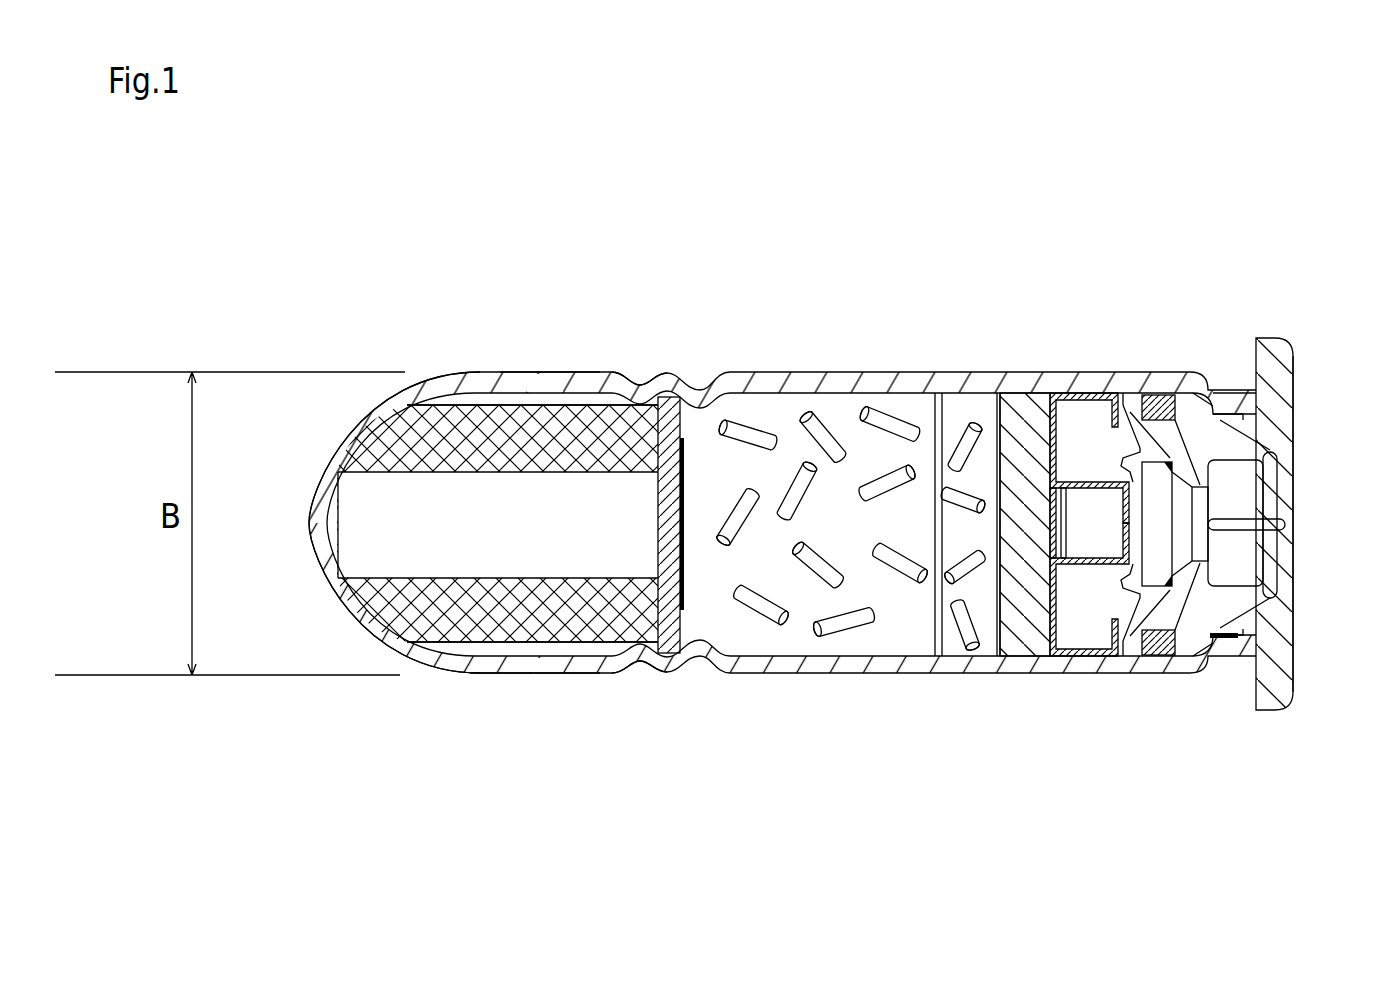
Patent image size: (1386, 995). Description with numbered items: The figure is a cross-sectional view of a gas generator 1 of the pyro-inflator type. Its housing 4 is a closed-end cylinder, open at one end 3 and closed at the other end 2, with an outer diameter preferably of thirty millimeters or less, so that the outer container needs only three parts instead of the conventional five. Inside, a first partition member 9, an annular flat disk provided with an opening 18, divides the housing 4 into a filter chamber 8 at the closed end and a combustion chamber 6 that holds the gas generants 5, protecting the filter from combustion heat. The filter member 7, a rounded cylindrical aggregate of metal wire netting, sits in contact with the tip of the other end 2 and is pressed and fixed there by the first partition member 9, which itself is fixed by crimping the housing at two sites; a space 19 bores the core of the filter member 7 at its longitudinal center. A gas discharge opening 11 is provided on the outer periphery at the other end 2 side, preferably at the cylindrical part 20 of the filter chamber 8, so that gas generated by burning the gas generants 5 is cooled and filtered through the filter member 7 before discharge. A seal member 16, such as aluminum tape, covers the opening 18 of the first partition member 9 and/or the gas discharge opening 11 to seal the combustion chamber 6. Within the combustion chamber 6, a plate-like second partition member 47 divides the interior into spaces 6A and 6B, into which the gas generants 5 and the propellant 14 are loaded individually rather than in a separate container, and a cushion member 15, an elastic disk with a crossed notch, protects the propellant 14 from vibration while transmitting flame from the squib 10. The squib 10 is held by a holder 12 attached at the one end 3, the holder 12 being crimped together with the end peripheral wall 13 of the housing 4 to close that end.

The gas generator 1 is at (1274, 229).
The other end 2 is at (307, 556).
The one end 3 is at (1268, 412).
The housing 4 is at (858, 374).
The gas generants 5 is at (803, 413).
The combustion chamber 6 is at (1023, 212).
The space 6A is at (928, 405).
The space 6B is at (974, 405).
The filter member 7 is at (632, 392).
The filter chamber 8 is at (606, 399).
The first partition member 9 is at (670, 648).
The squib 10 is at (1205, 655).
The gas discharge opening 11 is at (550, 373).
The holder 12 is at (1283, 640).
The end peripheral wall 13 is at (1240, 392).
The propellant 14 is at (990, 395).
The cushion member 15 is at (1035, 393).
The seal member 16 is at (684, 575).
The opening 18 is at (667, 527).
The space 19 is at (438, 527).
The cylindrical part 20 is at (510, 665).
The second partition member 47 is at (935, 640).